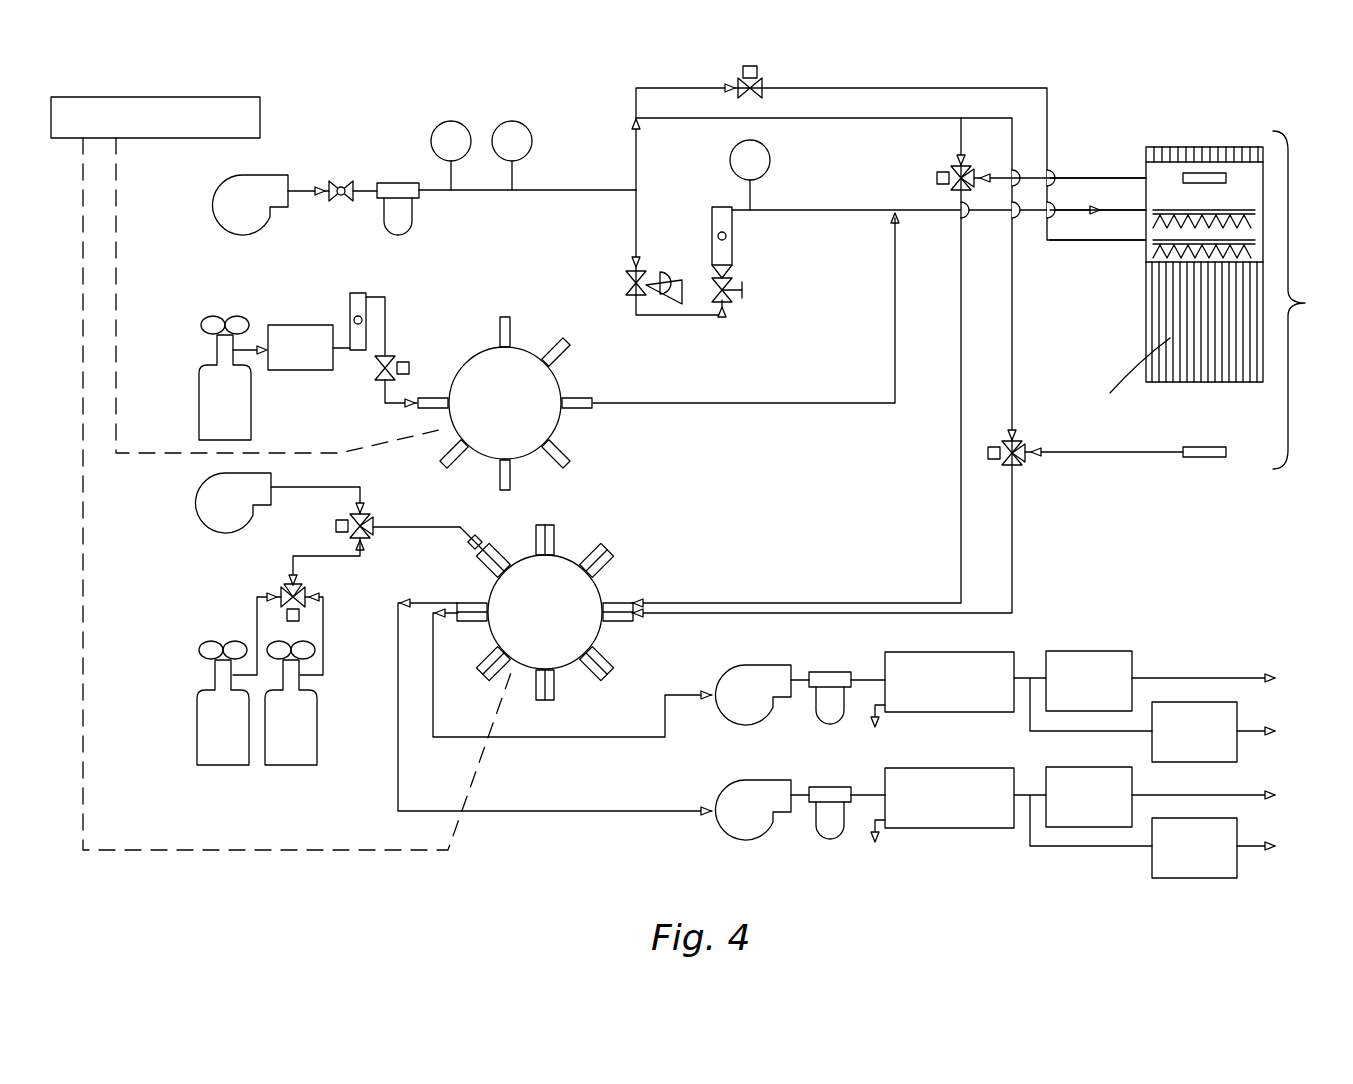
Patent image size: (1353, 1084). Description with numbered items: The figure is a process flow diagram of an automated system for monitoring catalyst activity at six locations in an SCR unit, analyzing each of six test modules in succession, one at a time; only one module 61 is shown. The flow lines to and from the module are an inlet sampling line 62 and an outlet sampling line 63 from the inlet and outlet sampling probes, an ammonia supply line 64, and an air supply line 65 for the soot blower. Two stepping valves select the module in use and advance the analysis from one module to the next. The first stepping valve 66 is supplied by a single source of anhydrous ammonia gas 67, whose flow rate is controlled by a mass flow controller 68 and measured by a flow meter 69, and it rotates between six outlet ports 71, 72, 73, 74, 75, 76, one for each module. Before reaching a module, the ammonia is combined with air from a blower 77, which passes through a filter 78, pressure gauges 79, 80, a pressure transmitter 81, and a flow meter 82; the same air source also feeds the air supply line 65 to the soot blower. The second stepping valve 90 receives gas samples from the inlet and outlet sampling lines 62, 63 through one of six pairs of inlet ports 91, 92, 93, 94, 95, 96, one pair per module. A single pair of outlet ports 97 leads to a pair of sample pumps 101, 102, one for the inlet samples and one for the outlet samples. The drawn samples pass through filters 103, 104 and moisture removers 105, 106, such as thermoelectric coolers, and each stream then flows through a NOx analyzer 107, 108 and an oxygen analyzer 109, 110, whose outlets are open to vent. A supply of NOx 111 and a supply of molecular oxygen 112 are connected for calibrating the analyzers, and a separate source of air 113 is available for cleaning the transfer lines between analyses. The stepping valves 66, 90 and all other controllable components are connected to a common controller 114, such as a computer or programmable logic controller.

The module 61 is at (1191, 300).
The inlet sampling line 62 is at (1068, 172).
The outlet sampling line 63 is at (1120, 460).
The ammonia supply line 64 is at (1078, 207).
The air supply line 65 is at (1066, 245).
The first stepping valve 66 is at (560, 401).
The source of anhydrous ammonia gas 67 is at (252, 412).
The mass flow controller 68 is at (297, 325).
The flow meter 69 is at (350, 290).
The outlet port 71 is at (496, 325).
The outlet port 72 is at (552, 347).
The outlet port 73 is at (577, 395).
The outlet port 74 is at (568, 456).
The outlet port 75 is at (500, 488).
The outlet port 76 is at (448, 462).
The blower 77 is at (226, 232).
The filter 78 is at (410, 240).
The pressure gauge 79 is at (430, 122).
The pressure gauge 80 is at (771, 150).
The pressure transmitter 81 is at (528, 123).
The flow meter 82 is at (735, 256).
The second stepping valve 90 is at (595, 620).
The pair of inlet ports 91 is at (558, 538).
The pair of inlet ports 92 is at (608, 571).
The pair of inlet ports 93 is at (620, 620).
The pair of inlet ports 94 is at (606, 658).
The pair of inlet ports 95 is at (555, 690).
The pair of inlet ports 96 is at (495, 684).
The pair of outlet ports 97 is at (470, 600).
The sample pump 101 is at (748, 663).
The sample pump 102 is at (728, 840).
The filter 103 is at (838, 666).
The filter 104 is at (820, 848).
The moisture remover 105 is at (1002, 647).
The moisture remover 106 is at (980, 830).
The NOx analyzer 107 is at (1103, 650).
The NOx analyzer 108 is at (1098, 827).
The oxygen analyzer 109 is at (1205, 702).
The oxygen analyzer 110 is at (1200, 878).
The supply of NOx 111 is at (218, 770).
The supply of molecular oxygen 112 is at (296, 775).
The source of air 113 is at (198, 497).
The controller 114 is at (261, 112).